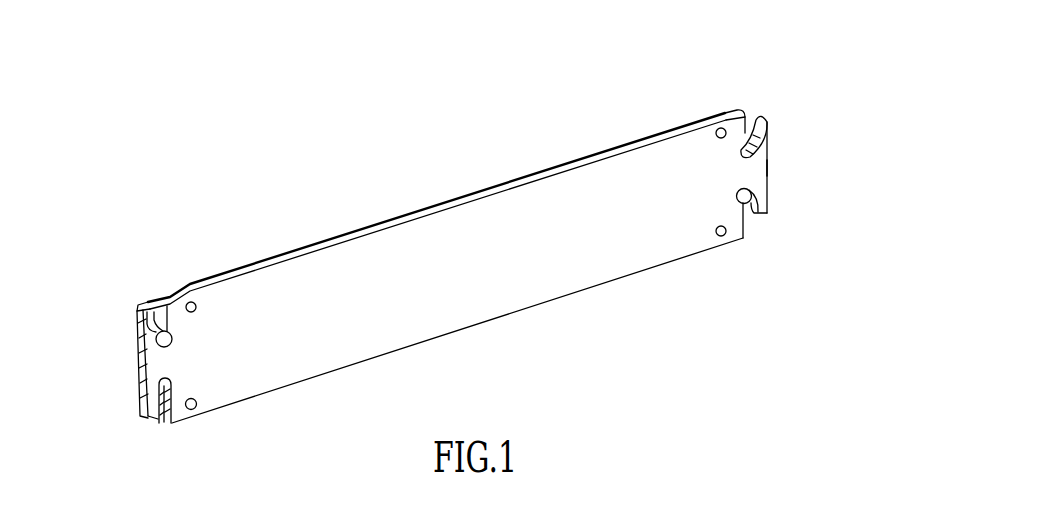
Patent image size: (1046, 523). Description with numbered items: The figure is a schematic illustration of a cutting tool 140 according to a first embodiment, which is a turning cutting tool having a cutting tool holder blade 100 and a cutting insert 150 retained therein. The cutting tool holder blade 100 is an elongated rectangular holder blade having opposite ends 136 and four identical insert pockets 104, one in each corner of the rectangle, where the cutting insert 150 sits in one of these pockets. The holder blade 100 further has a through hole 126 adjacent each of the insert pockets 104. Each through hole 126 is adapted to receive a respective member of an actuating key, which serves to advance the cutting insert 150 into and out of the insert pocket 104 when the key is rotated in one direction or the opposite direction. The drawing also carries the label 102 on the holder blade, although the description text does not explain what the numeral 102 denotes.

The cutting tool holder blade 100 is at (410, 186).
The end edge 102 is at (786, 132).
The insert pocket 104 is at (747, 96).
The through hole 126 is at (713, 156).
The opposite ends 136 is at (786, 168).
The cutting tool 140 is at (286, 146).
The cutting insert 150 is at (157, 283).